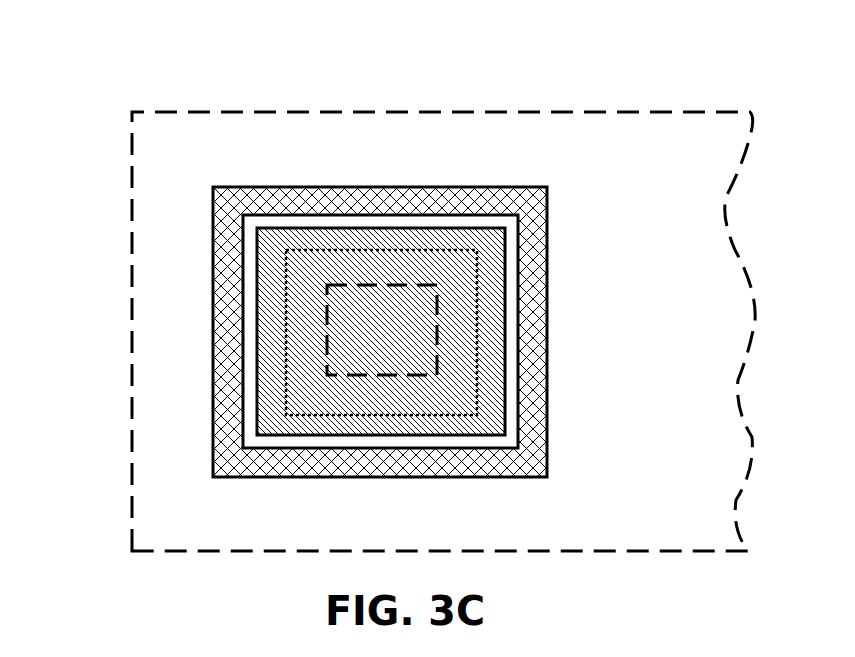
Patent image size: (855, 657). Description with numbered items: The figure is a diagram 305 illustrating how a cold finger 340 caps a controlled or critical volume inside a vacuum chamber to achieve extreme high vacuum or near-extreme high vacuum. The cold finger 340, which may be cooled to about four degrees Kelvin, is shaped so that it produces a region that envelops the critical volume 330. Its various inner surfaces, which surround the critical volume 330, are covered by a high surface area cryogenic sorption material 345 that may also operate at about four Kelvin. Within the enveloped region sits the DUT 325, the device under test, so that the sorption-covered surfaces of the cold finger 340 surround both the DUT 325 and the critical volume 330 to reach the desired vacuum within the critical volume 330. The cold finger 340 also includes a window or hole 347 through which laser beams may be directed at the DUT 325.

The diagram 305 is at (702, 64).
The cold finger 340 is at (588, 100).
The high surface area cryogenic sorption material 345 is at (547, 340).
The DUT 325 is at (256, 391).
The critical volume 330 is at (302, 236).
The window or hole 347 is at (393, 268).